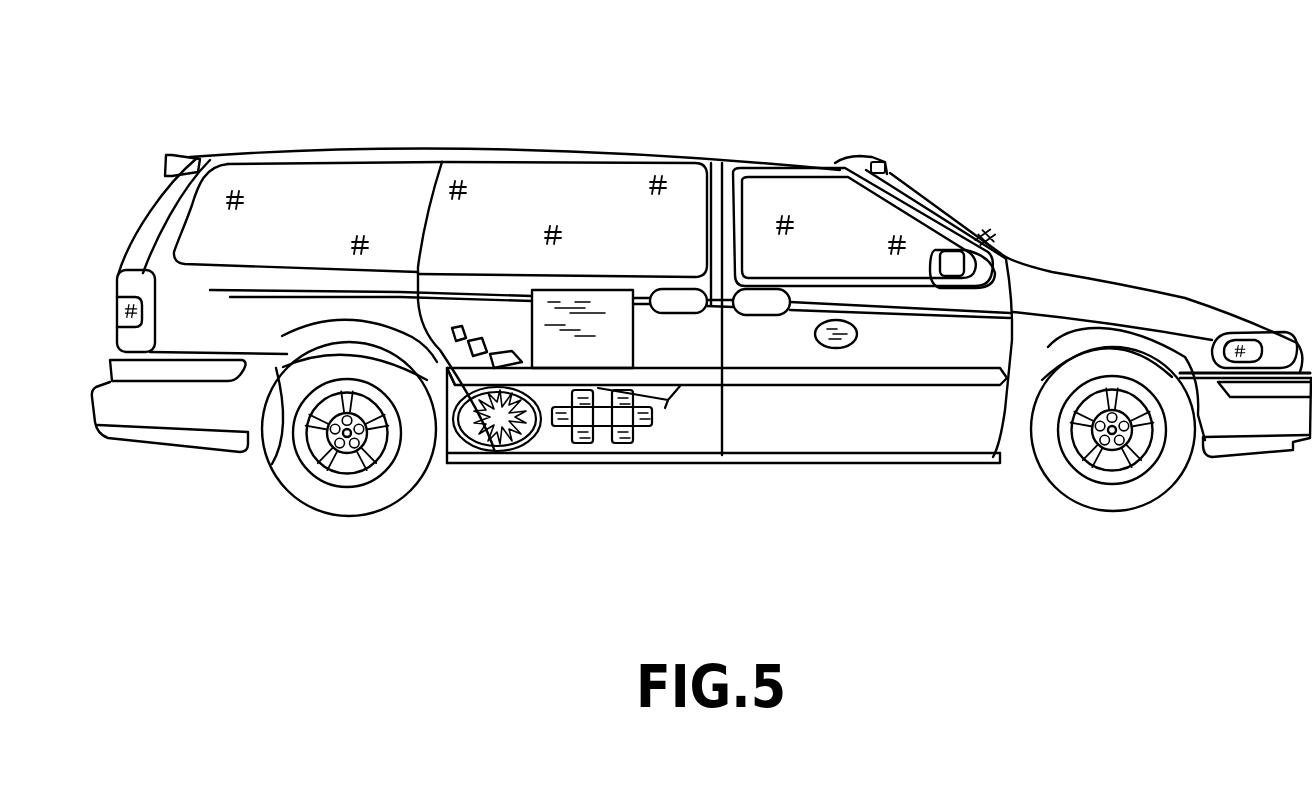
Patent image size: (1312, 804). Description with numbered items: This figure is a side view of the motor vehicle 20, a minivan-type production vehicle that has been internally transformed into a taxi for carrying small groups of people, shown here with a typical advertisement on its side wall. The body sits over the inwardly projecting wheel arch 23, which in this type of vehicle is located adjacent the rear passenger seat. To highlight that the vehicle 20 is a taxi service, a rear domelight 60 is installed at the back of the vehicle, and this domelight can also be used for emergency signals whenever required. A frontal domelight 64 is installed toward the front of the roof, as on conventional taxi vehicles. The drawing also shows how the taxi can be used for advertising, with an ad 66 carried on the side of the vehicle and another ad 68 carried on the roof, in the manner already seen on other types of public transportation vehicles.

The motor vehicle 20 is at (1176, 119).
The wheel arch 23 is at (272, 464).
The rear domelight 60 is at (177, 153).
The frontal domelight 64 is at (890, 173).
The ad 66 is at (603, 417).
The ad 68 is at (560, 148).